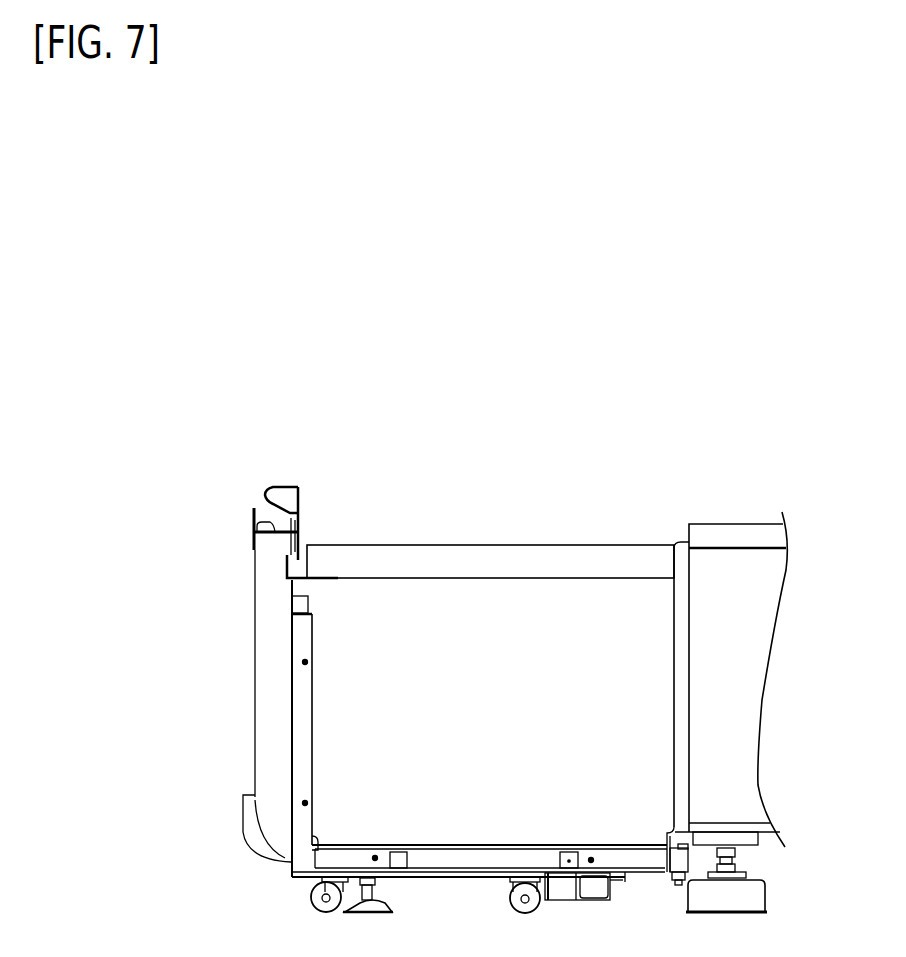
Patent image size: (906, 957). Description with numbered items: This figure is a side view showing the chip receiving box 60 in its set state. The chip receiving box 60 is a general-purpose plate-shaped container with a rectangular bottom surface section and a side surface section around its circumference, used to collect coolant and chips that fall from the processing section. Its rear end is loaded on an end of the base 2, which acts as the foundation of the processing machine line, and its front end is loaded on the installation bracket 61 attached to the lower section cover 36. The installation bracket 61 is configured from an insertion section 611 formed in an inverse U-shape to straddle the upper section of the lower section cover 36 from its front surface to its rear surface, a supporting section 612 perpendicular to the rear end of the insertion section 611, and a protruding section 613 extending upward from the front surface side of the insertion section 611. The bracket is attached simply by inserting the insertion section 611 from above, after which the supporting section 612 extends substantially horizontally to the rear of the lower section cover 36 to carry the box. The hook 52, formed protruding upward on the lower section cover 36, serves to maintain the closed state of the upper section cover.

The base 2 is at (727, 578).
The lower section cover 36 is at (275, 745).
The hook 52 is at (281, 497).
The chip receiving box 60 is at (530, 560).
The installation bracket 61 is at (220, 528).
The insertion section 611 is at (253, 525).
The supporting section 612 is at (302, 571).
The protruding section 613 is at (253, 515).